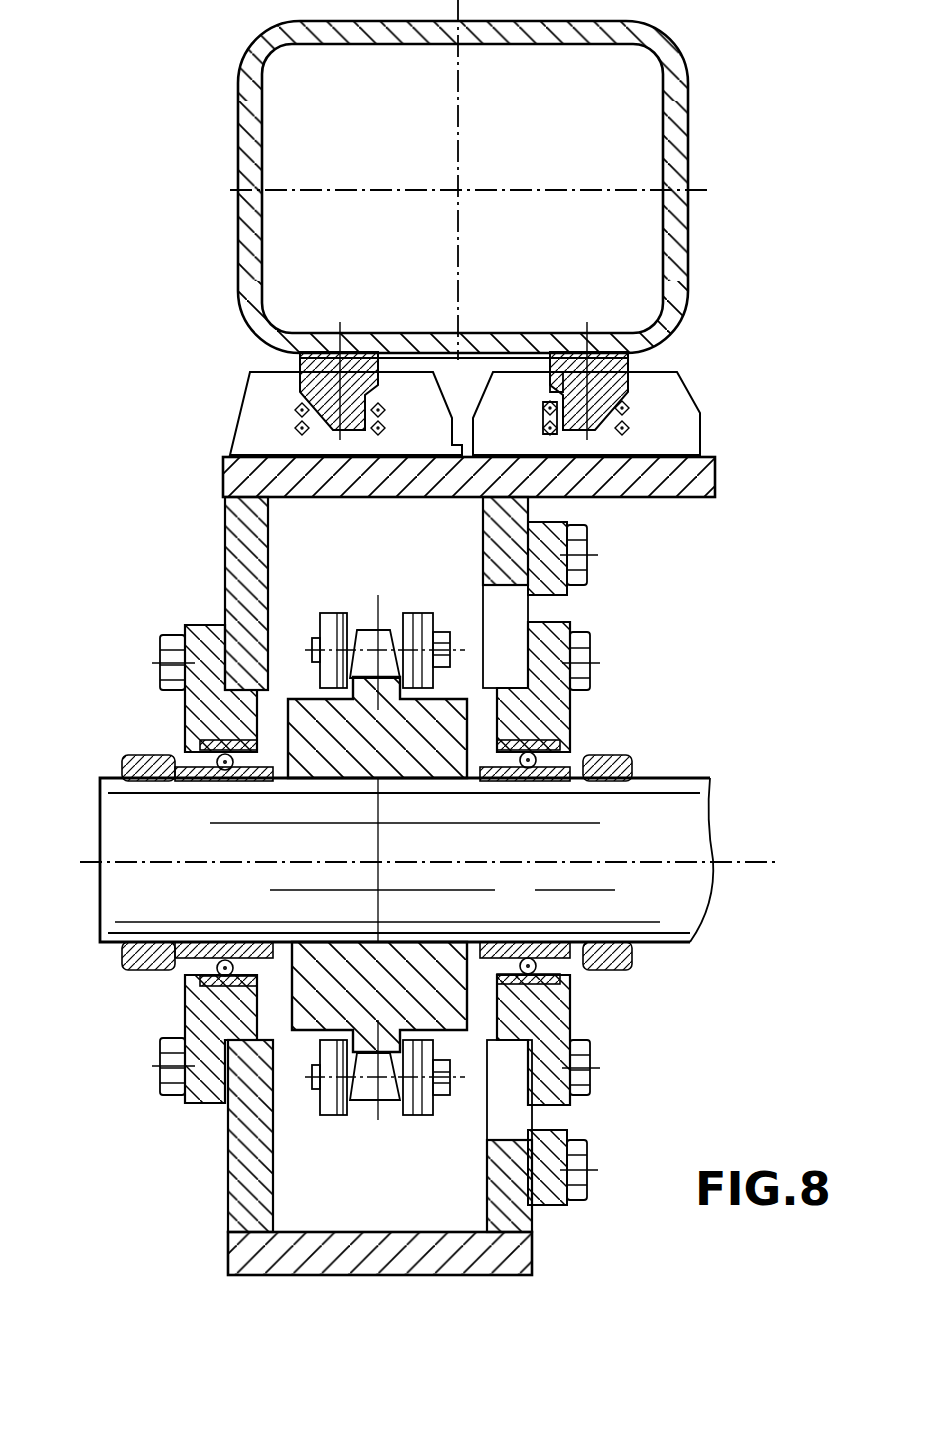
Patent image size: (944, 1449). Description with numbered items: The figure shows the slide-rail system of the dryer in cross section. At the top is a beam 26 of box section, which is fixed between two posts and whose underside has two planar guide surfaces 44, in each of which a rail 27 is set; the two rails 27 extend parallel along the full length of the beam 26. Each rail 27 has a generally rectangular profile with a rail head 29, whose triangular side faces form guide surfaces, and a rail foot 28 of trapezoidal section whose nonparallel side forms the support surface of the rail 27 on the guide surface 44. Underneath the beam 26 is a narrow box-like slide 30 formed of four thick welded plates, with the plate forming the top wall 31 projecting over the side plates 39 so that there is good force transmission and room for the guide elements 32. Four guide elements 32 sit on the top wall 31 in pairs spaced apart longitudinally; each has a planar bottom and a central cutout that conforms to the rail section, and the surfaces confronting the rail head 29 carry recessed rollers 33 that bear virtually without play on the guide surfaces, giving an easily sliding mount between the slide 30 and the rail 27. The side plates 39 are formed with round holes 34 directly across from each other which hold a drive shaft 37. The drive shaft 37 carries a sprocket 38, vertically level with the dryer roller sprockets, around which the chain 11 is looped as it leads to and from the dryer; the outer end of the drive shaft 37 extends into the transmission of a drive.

The beam 26 is at (245, 145).
The guide surface 44 is at (300, 352).
The rail 27 is at (300, 372).
The guide element 32 is at (243, 403).
The roller 33 is at (295, 428).
The rail foot 28 is at (550, 376).
The rail head 29 is at (545, 420).
The top wall 31 is at (715, 478).
The side plate 39 is at (252, 545).
The slide 30 is at (562, 548).
The chain 11 is at (320, 640).
The hole 34 is at (512, 640).
The sprocket 38 is at (455, 740).
The drive shaft 37 is at (665, 930).